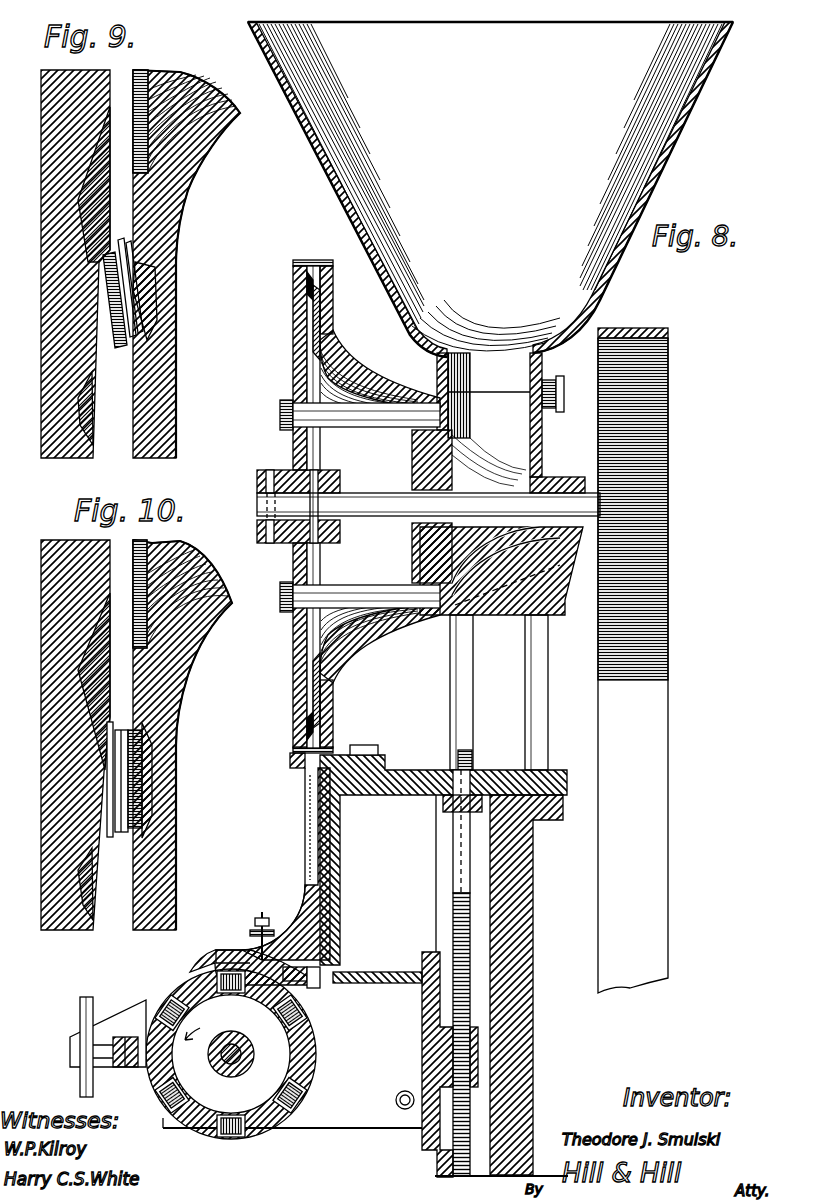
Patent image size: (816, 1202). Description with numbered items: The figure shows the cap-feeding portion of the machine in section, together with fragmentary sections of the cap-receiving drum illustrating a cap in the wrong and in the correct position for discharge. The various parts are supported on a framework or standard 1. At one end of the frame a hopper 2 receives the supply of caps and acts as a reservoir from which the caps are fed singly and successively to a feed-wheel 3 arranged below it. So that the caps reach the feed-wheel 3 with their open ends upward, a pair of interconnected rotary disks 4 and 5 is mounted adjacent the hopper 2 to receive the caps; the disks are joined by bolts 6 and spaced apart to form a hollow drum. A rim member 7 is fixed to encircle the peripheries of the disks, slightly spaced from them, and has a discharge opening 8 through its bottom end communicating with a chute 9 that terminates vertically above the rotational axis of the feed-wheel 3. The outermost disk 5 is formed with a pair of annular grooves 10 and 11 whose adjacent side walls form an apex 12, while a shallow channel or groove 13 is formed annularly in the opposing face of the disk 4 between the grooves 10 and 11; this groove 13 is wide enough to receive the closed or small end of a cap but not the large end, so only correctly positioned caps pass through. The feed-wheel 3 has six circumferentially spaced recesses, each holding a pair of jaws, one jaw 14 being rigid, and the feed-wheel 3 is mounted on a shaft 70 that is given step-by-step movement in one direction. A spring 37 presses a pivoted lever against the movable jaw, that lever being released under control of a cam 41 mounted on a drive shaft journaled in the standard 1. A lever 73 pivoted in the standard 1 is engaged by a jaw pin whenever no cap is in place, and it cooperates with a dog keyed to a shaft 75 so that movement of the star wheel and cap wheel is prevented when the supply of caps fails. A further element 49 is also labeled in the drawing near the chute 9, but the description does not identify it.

In FIG. 8, the framework or standard 1 is at (527, 1062).
In FIG. 8, the hopper 2 is at (672, 148).
In FIG. 8, the feed-wheel 3 is at (315, 1052).
In FIG. 9, the rotary disk 4 is at (212, 118).
In FIG. 10, the rotary disk 4 is at (208, 603).
In FIG. 8, the rotary disk 4 is at (368, 637).
In FIG. 9, the outermost rotary disk 5 is at (47, 241).
In FIG. 8, the outermost rotary disk 5 is at (303, 379).
In FIG. 8, the bolts 6 is at (353, 410).
In FIG. 8, the rim member 7 is at (301, 260).
In FIG. 8, the discharge opening 8 is at (292, 762).
In FIG. 8, the chute 9 is at (302, 900).
In FIG. 9, the annular groove 10 is at (86, 172).
In FIG. 10, the annular groove 10 is at (86, 655).
In FIG. 8, the annular groove 10 is at (303, 350).
In FIG. 9, the annular groove 11 is at (80, 415).
In FIG. 10, the annular groove 11 is at (80, 893).
In FIG. 8, the annular groove 11 is at (297, 287).
In FIG. 9, the apex 12 is at (105, 320).
In FIG. 10, the apex 12 is at (105, 790).
In FIG. 8, the apex 12 is at (310, 318).
In FIG. 9, the shallow channel or groove 13 is at (150, 296).
In FIG. 10, the shallow channel or groove 13 is at (150, 768).
In FIG. 8, the shallow channel or groove 13 is at (331, 322).
In FIG. 8, the jaw 14 is at (300, 1018).
In FIG. 8, the spring 37 is at (400, 1091).
In FIG. 8, the cam 41 is at (252, 931).
In FIG. 8, the screw 49 is at (262, 912).
In FIG. 8, the shaft 70 is at (232, 1031).
In FIG. 8, the lever 73 is at (121, 1068).
In FIG. 8, the shaft 75 is at (80, 1003).